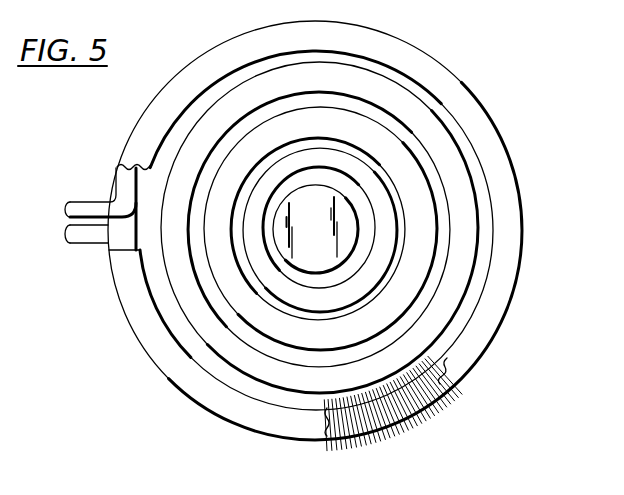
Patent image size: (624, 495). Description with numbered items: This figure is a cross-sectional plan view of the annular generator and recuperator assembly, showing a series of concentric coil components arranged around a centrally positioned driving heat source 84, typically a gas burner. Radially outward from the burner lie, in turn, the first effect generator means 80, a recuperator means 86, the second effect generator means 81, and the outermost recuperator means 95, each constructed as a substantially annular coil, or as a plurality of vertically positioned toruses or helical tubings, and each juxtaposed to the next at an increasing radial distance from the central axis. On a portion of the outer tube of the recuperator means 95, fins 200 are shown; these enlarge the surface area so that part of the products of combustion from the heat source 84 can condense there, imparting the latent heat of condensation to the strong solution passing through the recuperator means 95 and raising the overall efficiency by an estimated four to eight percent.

The first effect generator means 80 is at (371, 247).
The second effect generator means 81 is at (182, 327).
The driving heat source 84 is at (300, 212).
The recuperator means 86 is at (387, 127).
The recuperator means 95 is at (498, 332).
The fins 200 is at (408, 419).